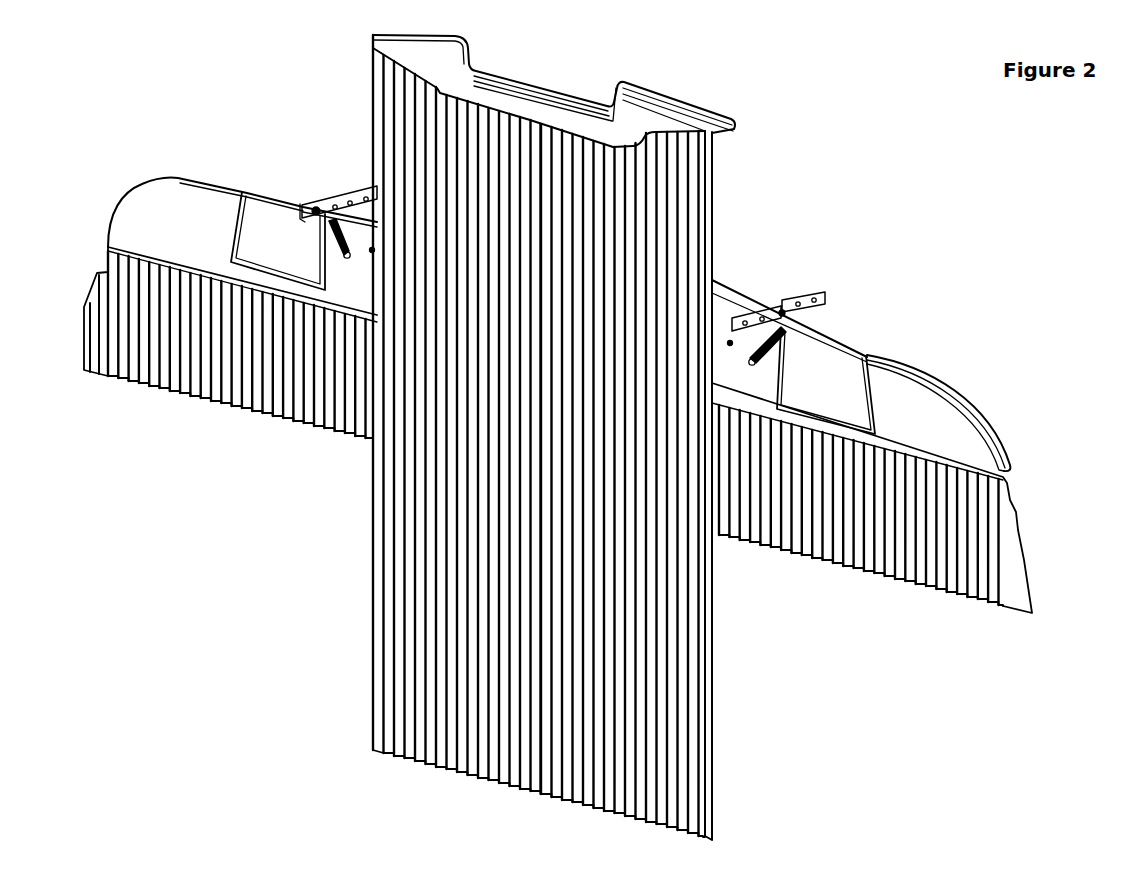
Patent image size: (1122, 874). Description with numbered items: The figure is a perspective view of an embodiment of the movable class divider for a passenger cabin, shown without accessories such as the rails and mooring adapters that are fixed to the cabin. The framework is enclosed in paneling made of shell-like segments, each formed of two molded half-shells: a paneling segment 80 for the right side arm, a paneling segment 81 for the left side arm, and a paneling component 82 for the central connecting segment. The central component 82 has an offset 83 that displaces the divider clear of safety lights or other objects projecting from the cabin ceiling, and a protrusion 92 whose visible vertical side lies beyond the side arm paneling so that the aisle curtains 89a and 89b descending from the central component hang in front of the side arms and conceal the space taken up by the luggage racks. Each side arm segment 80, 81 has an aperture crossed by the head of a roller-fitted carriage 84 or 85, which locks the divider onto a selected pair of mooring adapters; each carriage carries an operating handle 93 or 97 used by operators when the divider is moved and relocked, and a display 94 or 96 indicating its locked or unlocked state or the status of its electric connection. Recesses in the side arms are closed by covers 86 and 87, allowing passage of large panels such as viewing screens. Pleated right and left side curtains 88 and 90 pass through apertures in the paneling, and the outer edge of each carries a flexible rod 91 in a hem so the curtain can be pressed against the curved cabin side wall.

The paneling segment for the right side arm 80 is at (137, 186).
The paneling segment for the left side arm 81 is at (940, 402).
The paneling segment for the central connecting segment 82 is at (557, 70).
The offset 83 is at (567, 115).
The roller-fitted carriage 84 is at (363, 190).
The roller-fitted carriage 85 is at (805, 298).
The cover 86 is at (265, 233).
The cover 87 is at (838, 340).
The right side curtain 88 is at (267, 397).
The right aisle curtain 89a is at (392, 592).
The left aisle curtain 89b is at (680, 677).
The left side curtain 90 is at (858, 548).
The flexible rod 91 is at (88, 303).
The protrusion 92 is at (673, 193).
The operating handle 93 is at (322, 238).
The display 94 is at (371, 253).
The display 96 is at (731, 350).
The operating handle 97 is at (770, 352).